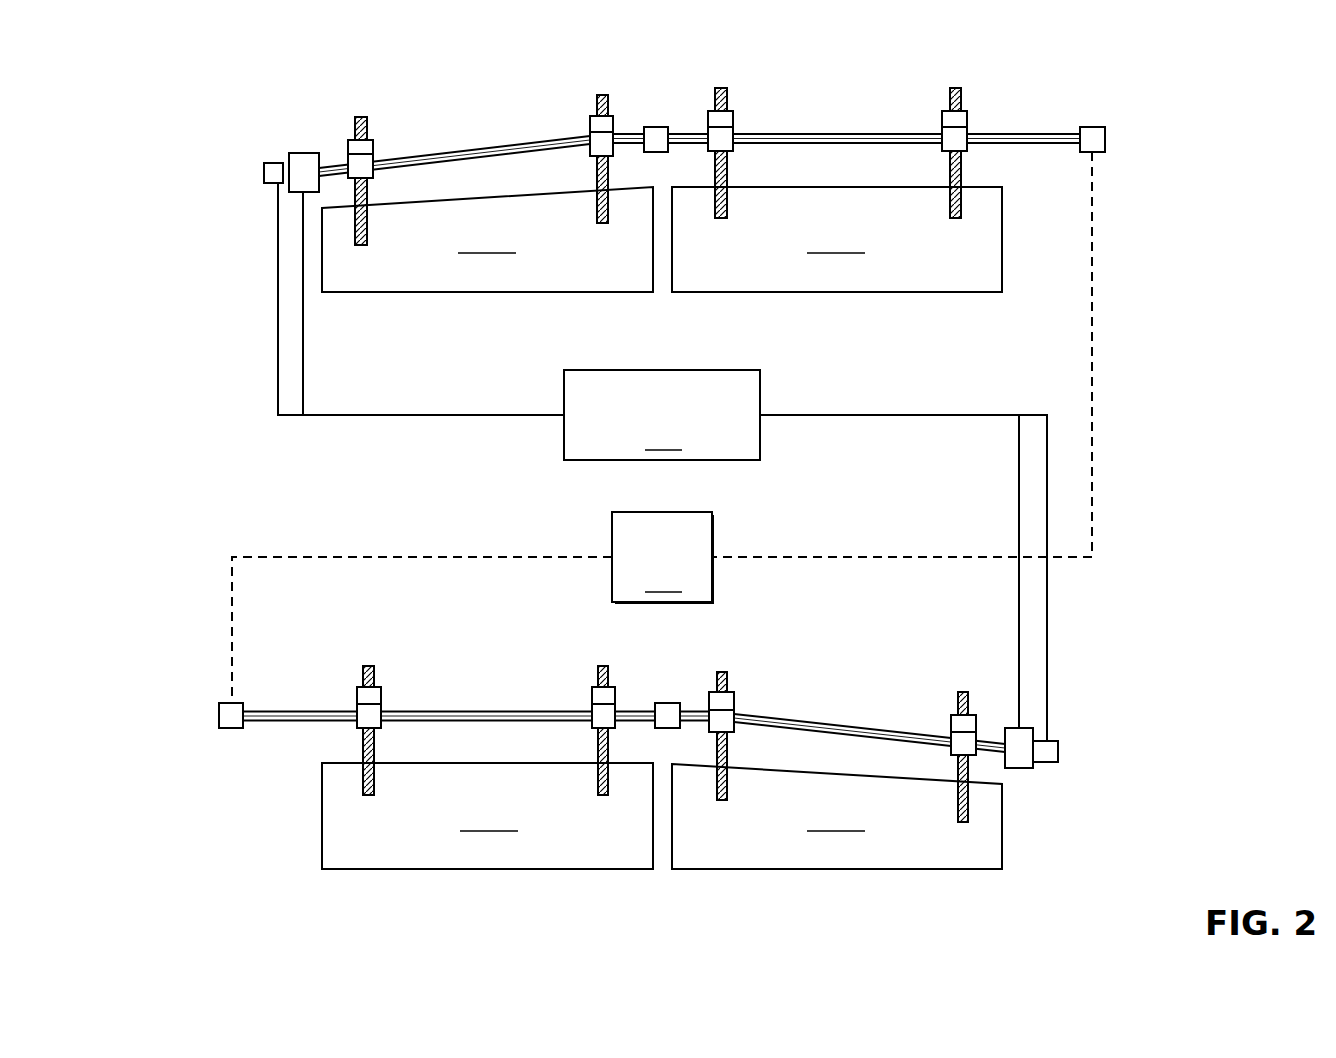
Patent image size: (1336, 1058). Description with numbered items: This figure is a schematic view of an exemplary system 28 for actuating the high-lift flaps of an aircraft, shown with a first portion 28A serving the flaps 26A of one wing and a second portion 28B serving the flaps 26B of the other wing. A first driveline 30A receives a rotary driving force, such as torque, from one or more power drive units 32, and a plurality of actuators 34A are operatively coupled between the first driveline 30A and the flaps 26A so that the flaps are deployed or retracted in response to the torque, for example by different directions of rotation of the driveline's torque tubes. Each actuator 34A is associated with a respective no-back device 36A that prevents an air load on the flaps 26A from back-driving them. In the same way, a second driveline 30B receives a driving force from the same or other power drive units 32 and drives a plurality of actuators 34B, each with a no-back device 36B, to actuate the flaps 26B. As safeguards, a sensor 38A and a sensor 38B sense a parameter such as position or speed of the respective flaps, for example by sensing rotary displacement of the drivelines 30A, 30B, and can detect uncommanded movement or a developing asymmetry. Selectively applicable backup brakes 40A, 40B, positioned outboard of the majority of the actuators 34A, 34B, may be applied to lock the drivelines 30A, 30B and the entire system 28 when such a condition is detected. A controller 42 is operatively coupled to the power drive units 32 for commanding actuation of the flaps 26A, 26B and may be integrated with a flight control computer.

The flaps 26A is at (662, 239).
The flaps 26B is at (662, 816).
The system 28 is at (1118, 368).
The first portion 28A is at (232, 282).
The second portion 28B is at (205, 668).
The first driveline 30A is at (1058, 128).
The second driveline 30B is at (292, 723).
The power drive units 32 is at (663, 558).
The actuators 34A is at (361, 75).
The actuators 34B is at (365, 633).
The no-back device 36A is at (590, 124).
The no-back device 36B is at (592, 700).
The sensor 38A is at (264, 172).
The sensor 38B is at (1058, 750).
The backup brake 40A is at (303, 153).
The backup brake 40B is at (1019, 768).
The controller 42 is at (662, 415).